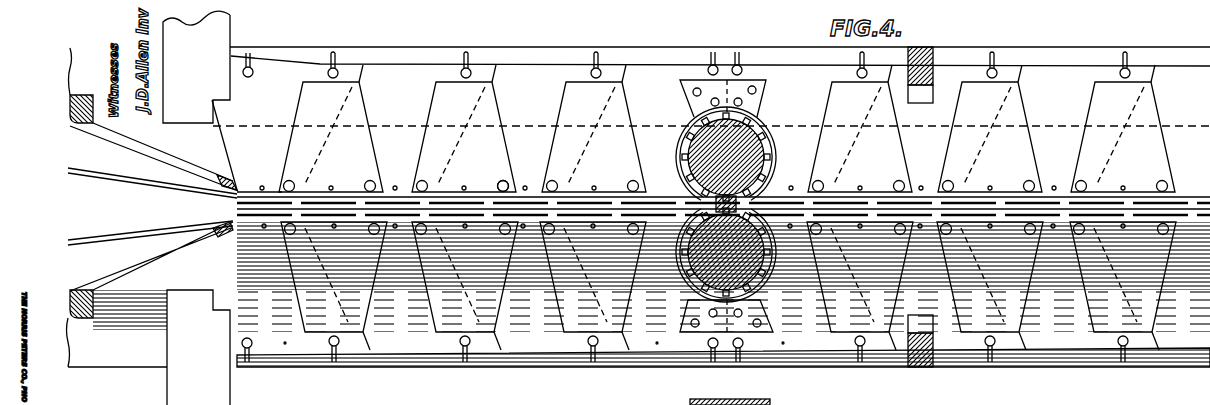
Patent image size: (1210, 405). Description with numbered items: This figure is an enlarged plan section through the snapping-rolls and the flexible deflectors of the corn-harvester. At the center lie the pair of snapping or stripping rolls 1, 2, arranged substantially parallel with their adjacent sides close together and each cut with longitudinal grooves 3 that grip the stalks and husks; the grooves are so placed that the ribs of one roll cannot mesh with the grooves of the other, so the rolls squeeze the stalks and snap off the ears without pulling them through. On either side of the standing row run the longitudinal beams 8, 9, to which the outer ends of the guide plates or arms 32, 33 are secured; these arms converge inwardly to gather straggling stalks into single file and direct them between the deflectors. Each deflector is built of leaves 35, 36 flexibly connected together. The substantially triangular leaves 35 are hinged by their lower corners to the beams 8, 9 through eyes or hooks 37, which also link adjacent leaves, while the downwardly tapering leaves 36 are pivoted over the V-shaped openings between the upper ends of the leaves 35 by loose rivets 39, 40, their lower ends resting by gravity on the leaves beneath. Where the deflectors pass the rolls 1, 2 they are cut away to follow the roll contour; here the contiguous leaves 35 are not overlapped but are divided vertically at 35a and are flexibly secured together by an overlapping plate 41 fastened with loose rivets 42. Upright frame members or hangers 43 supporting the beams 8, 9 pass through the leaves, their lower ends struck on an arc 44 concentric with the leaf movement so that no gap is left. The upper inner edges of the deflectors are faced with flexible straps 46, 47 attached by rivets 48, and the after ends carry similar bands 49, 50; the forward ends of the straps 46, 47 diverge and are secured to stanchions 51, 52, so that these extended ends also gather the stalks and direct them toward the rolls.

The snapping roll 1 is at (745, 154).
The snapping roll 2 is at (757, 275).
The longitudinal grooves 3 is at (683, 170).
The longitudinal beam 8 is at (746, 56).
The longitudinal beam 9 is at (872, 360).
The guide plate or arm 32 is at (150, 181).
The guide plate or arm 33 is at (180, 231).
The deflector leaf 35 is at (285, 343).
The vertical division between leaves 35a is at (720, 380).
The deflector leaf 36 is at (357, 318).
The eyes or hooks 37 is at (464, 360).
The loose rivet 39 is at (500, 182).
The loose rivet 40 is at (432, 174).
The overlapping plate 41 is at (750, 107).
The loose rivets 42 is at (693, 322).
The upright frame member or hanger 43 is at (935, 50).
The arc 44 is at (928, 95).
The strap or band 46 is at (175, 162).
The strap or band 47 is at (143, 263).
The rivets 48 is at (331, 185).
The band 49 is at (1003, 187).
The band 50 is at (867, 213).
The stanchion 51 is at (93, 100).
The stanchion 52 is at (90, 318).